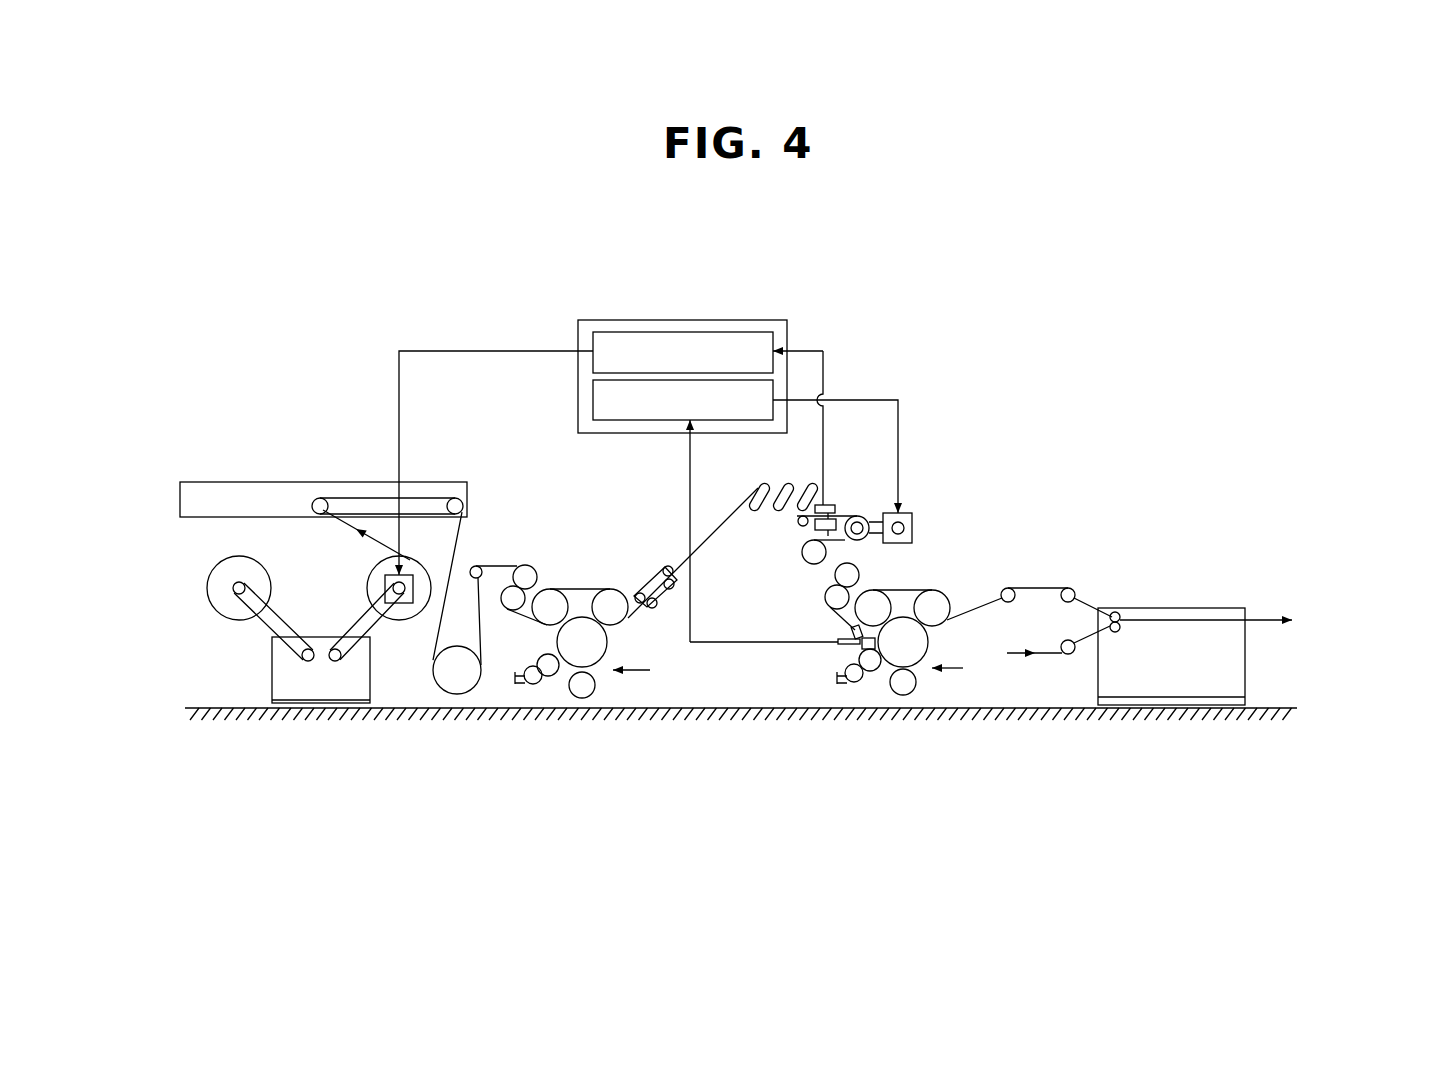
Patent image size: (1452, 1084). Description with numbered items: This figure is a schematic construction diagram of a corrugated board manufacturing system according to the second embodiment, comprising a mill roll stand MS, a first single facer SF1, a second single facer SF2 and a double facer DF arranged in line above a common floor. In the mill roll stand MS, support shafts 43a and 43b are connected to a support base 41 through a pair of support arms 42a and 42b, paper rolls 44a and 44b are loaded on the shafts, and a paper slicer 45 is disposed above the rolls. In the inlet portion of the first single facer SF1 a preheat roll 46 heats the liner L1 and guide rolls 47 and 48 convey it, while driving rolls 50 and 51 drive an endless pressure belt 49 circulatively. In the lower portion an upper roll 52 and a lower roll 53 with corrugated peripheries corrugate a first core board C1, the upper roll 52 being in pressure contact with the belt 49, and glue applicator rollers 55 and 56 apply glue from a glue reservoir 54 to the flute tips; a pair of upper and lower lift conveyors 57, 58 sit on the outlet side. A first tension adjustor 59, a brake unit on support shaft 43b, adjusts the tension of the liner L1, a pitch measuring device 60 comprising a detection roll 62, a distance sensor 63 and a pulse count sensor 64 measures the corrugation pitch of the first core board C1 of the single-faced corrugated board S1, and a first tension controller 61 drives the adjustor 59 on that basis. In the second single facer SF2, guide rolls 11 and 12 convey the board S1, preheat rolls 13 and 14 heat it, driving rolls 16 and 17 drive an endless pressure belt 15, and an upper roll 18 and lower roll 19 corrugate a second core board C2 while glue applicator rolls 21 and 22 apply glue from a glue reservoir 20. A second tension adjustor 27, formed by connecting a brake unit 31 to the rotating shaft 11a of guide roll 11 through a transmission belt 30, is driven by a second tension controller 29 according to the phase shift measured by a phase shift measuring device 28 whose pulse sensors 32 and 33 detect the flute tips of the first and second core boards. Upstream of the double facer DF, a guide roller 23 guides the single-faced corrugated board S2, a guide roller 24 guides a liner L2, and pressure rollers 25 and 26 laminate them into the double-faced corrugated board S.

The guide roll 11 is at (860, 513).
The rotating shaft 11a is at (857, 535).
The guide roll 12 is at (802, 548).
The preheat roll 13 is at (836, 574).
The preheat roll 14 is at (826, 598).
The endless pressure belt 15 is at (918, 588).
The driving roll 16 is at (882, 597).
The driving roll 17 is at (943, 600).
The upper roll 18 is at (927, 643).
The lower roll 19 is at (903, 695).
The glue reservoir 20 is at (840, 678).
The glue applicator roll 21 is at (855, 682).
The glue applicator roll 22 is at (870, 672).
The guide roller 23 is at (1073, 588).
The guide roller 24 is at (1070, 655).
The pressure roller 25 is at (1118, 612).
The pressure roller 26 is at (1115, 632).
The second tension adjustor 27 is at (950, 530).
The phase shift measuring device 28 is at (777, 630).
The second tension controller 29 is at (593, 405).
The transmission belt 30 is at (873, 520).
The brake unit 31 is at (910, 520).
The pulse sensor 32 is at (850, 628).
The pulse sensor 33 is at (860, 648).
The support base 41 is at (302, 697).
The support arm 42a is at (263, 625).
The support arm 42b is at (358, 632).
The support shaft 43a is at (215, 613).
The support shaft 43b is at (387, 588).
The paper roll 44a is at (233, 562).
The paper roll 44b is at (378, 570).
The paper slicer 45 is at (342, 488).
The preheat roll 46 is at (458, 694).
The guide roll 47 is at (525, 565).
The guide roll 48 is at (510, 588).
The endless belt 49 is at (582, 590).
The driving roll 50 is at (552, 590).
The driving roll 51 is at (618, 617).
The upper roll 52 is at (605, 649).
The lower roll 53 is at (582, 698).
The glue reservoir 54 is at (522, 686).
The glue applicator roller 55 is at (517, 686).
The glue applicator roller 56 is at (552, 677).
The lift conveyor 57 is at (650, 582).
The lift conveyor 58 is at (665, 592).
The first tension adjustor 59 is at (405, 603).
The pitch measuring device 60 is at (838, 428).
The first tension controller 61 is at (632, 333).
The detection roll 62 is at (821, 500).
The distance sensor 63 is at (830, 400).
The pulse count sensor 64 is at (828, 525).
The mill roll stand MS is at (208, 455).
The first single facer SF1 is at (492, 453).
The second single facer SF2 is at (1000, 425).
The double facer DF is at (1217, 480).
The liner L1 is at (332, 520).
The liner L2 is at (1048, 655).
The first core board C1 is at (635, 670).
The second core board C2 is at (952, 668).
The single-faced corrugated board S1 is at (723, 527).
The single-faced corrugated board S2 is at (1038, 588).
The double-faced corrugated board S is at (1263, 618).